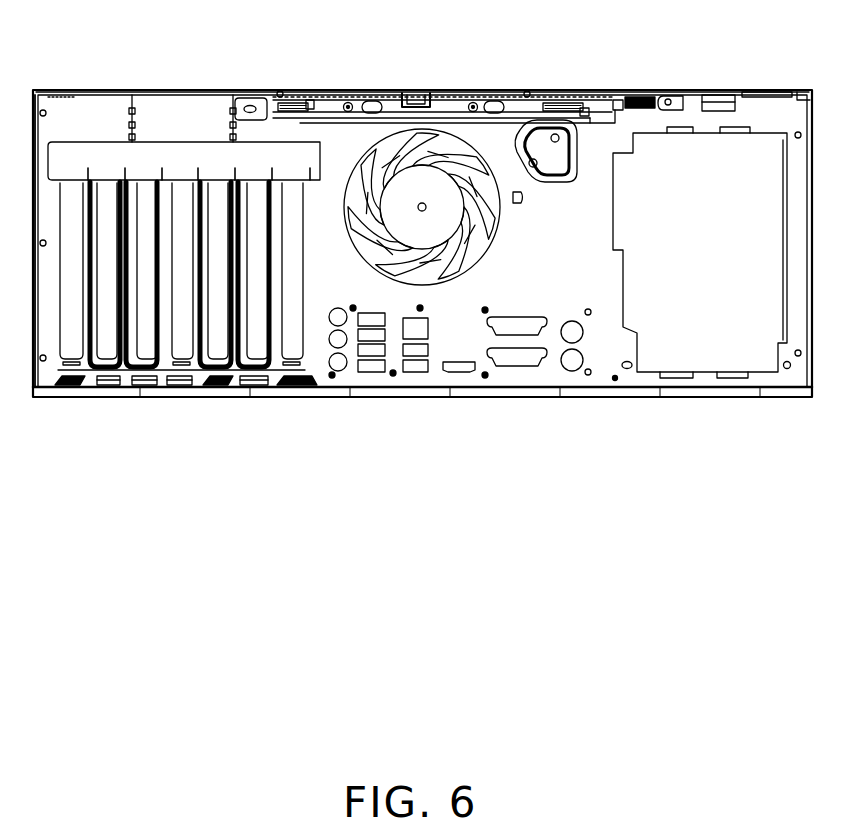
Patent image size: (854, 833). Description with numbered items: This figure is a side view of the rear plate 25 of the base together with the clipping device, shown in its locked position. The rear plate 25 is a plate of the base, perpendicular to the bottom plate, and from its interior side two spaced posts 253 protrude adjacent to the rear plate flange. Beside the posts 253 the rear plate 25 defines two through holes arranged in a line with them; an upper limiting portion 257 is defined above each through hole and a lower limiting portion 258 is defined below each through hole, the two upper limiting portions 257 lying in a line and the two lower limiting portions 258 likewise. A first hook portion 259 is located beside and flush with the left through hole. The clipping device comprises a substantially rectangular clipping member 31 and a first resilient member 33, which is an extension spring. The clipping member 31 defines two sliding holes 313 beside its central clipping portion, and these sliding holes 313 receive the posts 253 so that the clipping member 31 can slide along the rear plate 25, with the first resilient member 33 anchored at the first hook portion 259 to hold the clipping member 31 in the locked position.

The rear plate 25 is at (350, 373).
The clipping member 31 is at (431, 91).
The sliding holes 313 is at (368, 105).
The posts 253 is at (346, 106).
The upper limiting portion 257 is at (280, 91).
The lower limiting portion 258 is at (309, 101).
The first hook portion 259 is at (670, 96).
The first resilient member 33 is at (642, 96).